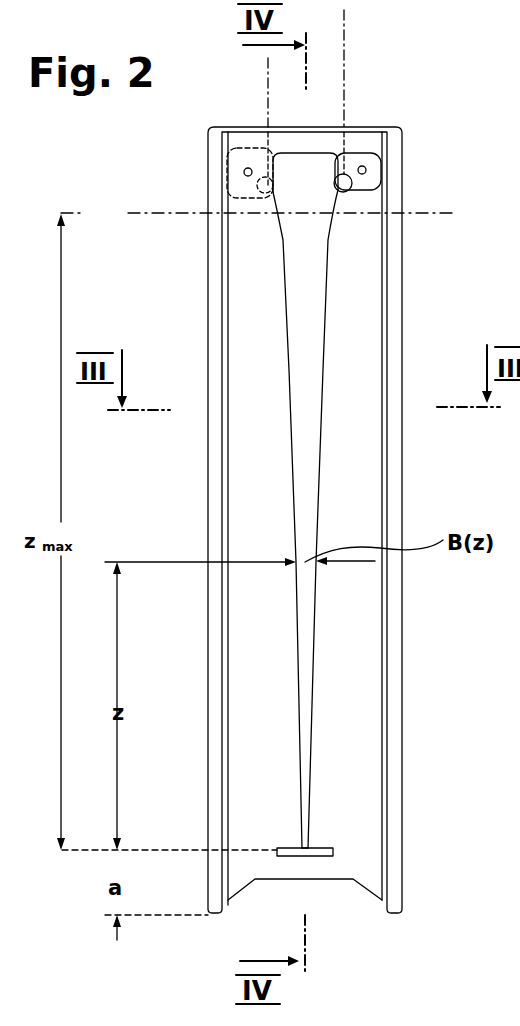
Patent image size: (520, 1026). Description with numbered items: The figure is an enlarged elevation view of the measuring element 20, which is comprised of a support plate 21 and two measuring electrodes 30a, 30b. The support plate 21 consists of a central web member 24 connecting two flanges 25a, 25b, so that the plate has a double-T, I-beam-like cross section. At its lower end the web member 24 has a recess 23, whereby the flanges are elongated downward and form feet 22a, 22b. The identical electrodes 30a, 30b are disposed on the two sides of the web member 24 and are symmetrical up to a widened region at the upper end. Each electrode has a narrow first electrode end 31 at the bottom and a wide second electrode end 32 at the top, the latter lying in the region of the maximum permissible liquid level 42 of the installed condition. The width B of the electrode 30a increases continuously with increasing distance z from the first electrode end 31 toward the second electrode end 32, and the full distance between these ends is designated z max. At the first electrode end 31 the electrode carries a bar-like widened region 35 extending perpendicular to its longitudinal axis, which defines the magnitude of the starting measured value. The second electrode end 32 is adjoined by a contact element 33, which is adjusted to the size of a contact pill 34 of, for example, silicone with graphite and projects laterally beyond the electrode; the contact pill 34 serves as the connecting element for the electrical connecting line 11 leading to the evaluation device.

The electrical connecting line 11 is at (268, 105).
The measuring element 20 is at (292, 548).
The support plate 21 is at (284, 465).
The foot 22a is at (213, 915).
The foot 22b is at (391, 913).
The recess 23 is at (327, 883).
The central web member 24 is at (350, 463).
The flange 25a is at (215, 515).
The flange 25b is at (392, 505).
The measuring electrode 30a is at (312, 348).
The measuring electrode 30b is at (238, 152).
The first electrode end 31 is at (307, 845).
The second electrode end 32 is at (305, 216).
The contact element 33 is at (355, 157).
The contact pill 34 is at (255, 190).
The bar-like widened region 35 is at (333, 852).
The maximum permissible liquid level 42 is at (420, 203).